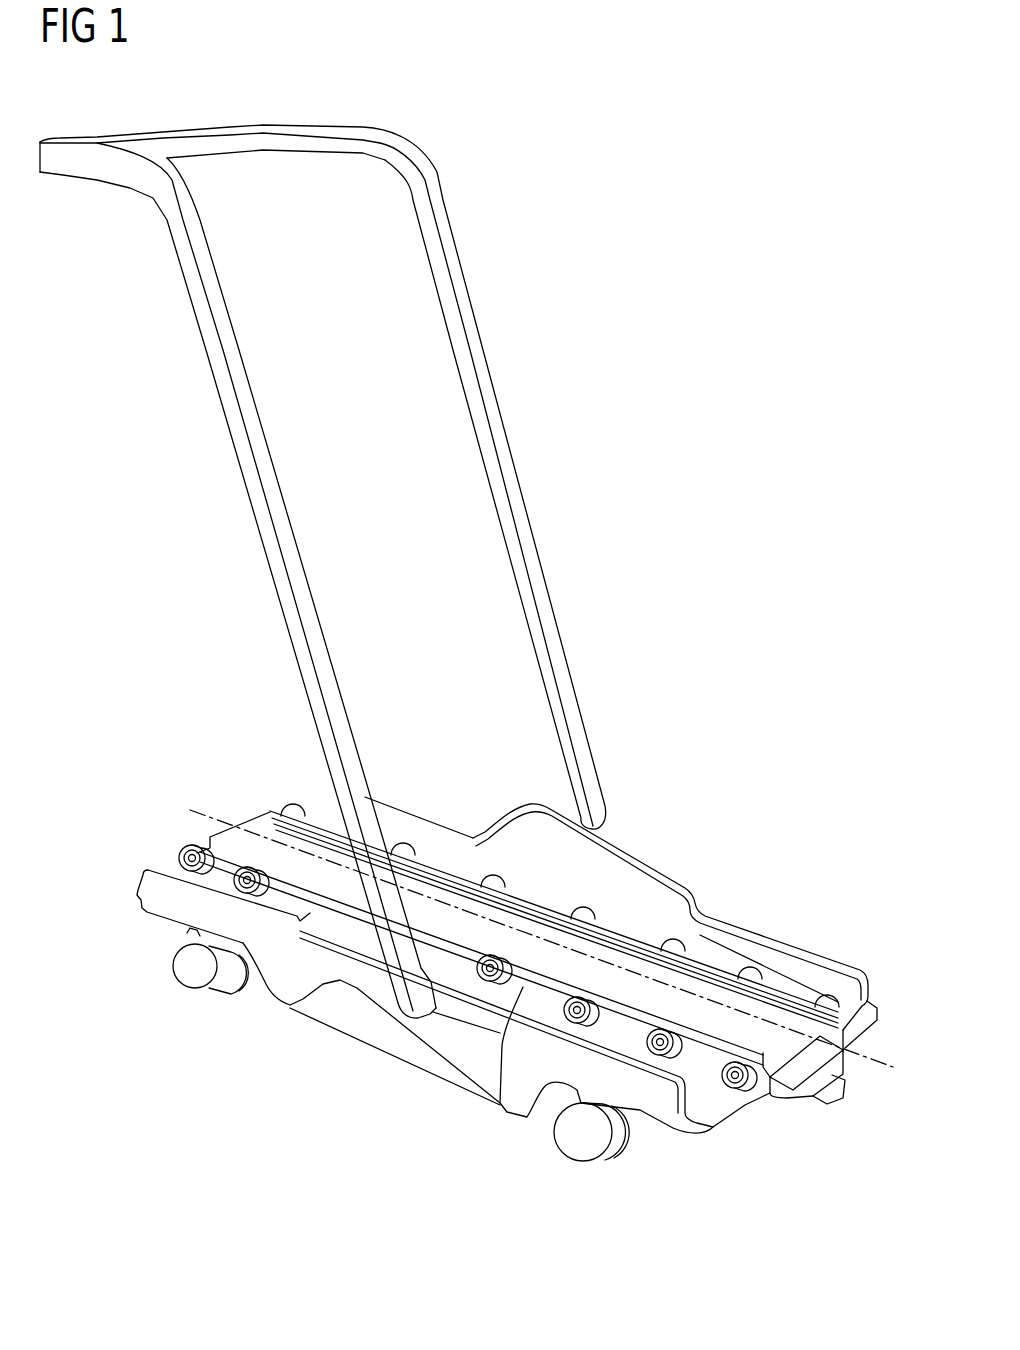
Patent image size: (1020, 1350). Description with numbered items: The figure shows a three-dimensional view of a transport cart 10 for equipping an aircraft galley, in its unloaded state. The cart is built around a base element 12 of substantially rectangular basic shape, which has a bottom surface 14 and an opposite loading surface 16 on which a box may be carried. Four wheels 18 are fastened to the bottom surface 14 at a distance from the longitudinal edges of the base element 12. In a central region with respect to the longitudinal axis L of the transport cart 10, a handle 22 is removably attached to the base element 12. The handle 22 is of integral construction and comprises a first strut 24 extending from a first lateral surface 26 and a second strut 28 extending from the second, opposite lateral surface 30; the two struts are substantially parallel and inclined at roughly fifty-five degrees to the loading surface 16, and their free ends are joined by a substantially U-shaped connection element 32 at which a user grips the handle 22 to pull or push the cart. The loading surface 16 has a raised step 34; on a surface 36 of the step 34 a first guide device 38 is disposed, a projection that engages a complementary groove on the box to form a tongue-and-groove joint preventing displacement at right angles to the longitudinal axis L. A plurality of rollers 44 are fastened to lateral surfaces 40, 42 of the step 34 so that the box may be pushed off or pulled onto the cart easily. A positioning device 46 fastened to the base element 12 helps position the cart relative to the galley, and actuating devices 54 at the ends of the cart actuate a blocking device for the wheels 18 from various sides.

The transport cart 10 is at (647, 295).
The base element 12 is at (756, 928).
The bottom surface 14 is at (154, 910).
The loading surface 16 is at (713, 955).
The wheels 18 is at (236, 970).
The handle 22 is at (483, 321).
The first strut 24 is at (217, 384).
The first lateral surface 26 is at (432, 1035).
The second strut 28 is at (438, 263).
The second lateral surface 30 is at (642, 857).
The connection element 32 is at (192, 131).
The raised step 34 is at (842, 1020).
The surface of the step 36 is at (258, 822).
The first guide device 38 is at (790, 1017).
The lateral surface of the step 40 is at (527, 1062).
The lateral surface of the step 42 is at (452, 868).
The rollers 44 is at (733, 1090).
The positioning device 46 is at (797, 1070).
The actuating devices 54 is at (825, 1098).
The longitudinal axis L is at (867, 1053).